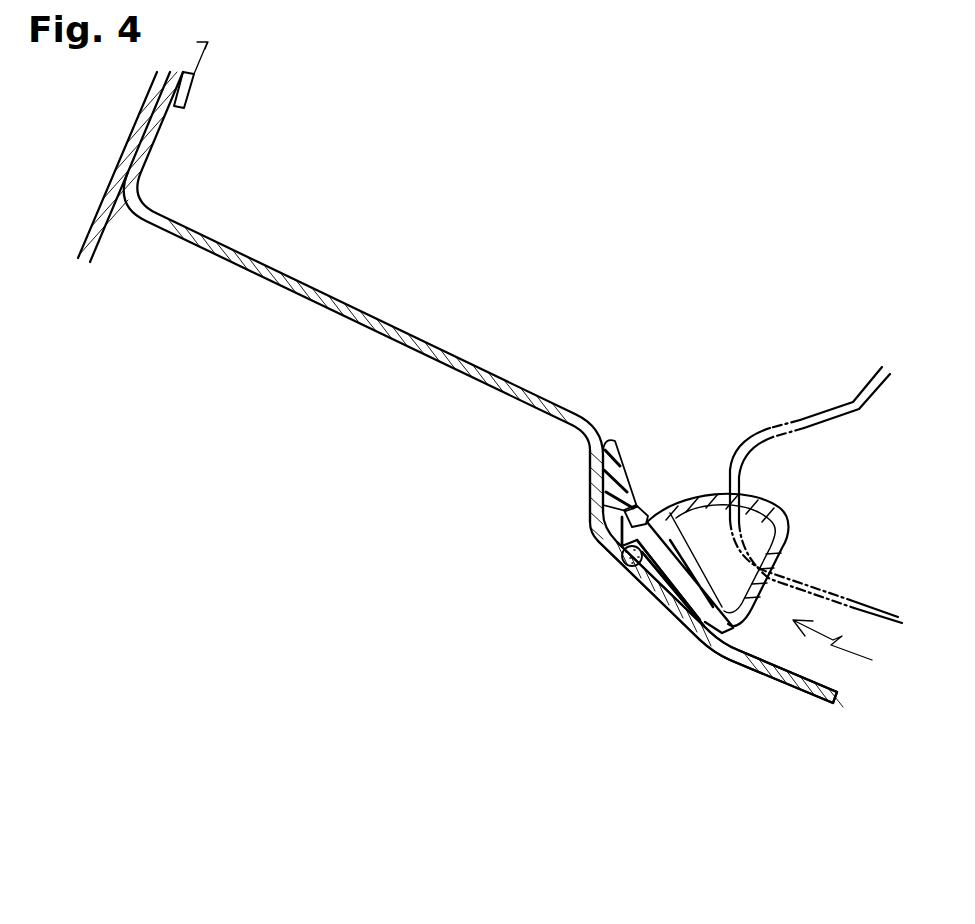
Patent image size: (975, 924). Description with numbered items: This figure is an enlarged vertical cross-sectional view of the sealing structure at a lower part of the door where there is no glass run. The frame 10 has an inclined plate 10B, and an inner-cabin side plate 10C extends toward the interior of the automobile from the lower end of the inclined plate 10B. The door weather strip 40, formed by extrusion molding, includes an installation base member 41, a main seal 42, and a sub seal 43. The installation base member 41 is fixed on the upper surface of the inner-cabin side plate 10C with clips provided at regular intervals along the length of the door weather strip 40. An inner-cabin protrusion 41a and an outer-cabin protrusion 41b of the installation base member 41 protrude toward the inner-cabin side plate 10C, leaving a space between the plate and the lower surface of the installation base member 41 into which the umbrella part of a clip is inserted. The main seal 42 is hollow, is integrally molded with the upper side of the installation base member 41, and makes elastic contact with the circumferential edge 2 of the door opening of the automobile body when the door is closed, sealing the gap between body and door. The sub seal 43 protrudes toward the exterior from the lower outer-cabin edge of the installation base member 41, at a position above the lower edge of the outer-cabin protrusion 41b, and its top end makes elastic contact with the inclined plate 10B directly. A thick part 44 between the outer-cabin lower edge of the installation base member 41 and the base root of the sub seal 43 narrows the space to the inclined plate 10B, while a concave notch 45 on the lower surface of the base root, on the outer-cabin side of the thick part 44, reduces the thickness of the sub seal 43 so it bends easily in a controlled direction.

The circumferential edge 2 is at (772, 428).
The frame 10 is at (401, 343).
The inclined plate 10B is at (590, 466).
The inner-cabin side plate 10C is at (784, 693).
The door weather strip 40 is at (847, 649).
The installation base member 41 is at (660, 617).
The inner-cabin protrusion 41a is at (688, 632).
The outer-cabin protrusion 41b is at (623, 567).
The main seal 42 is at (778, 502).
The sub seal 43 is at (623, 477).
The thick part 44 is at (640, 516).
The notch 45 is at (627, 512).